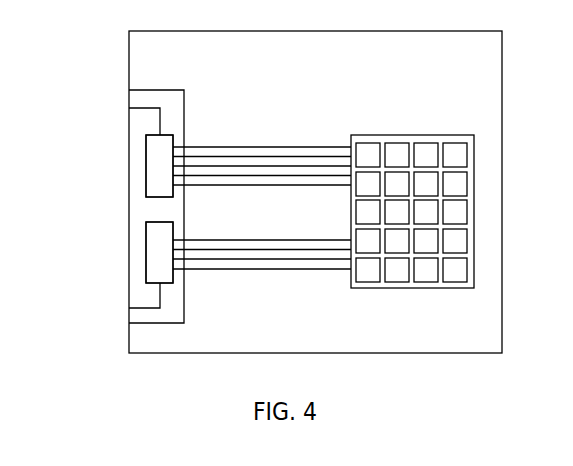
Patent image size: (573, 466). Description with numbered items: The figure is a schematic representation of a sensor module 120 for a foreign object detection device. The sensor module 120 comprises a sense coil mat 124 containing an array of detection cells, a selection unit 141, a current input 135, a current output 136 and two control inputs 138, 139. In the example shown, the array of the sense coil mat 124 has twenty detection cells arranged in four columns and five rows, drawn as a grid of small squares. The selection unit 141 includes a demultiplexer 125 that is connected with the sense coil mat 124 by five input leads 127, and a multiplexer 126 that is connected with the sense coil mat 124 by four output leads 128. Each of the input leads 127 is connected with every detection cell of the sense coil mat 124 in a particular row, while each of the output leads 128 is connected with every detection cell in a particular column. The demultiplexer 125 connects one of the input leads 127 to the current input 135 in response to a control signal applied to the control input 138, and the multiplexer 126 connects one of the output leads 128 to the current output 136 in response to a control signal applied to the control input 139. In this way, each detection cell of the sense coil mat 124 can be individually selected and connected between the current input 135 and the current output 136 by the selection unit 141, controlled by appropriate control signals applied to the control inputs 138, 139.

The sensor module 120 is at (128, 45).
The selection unit 141 is at (157, 90).
The control input 138 is at (129, 108).
The control input 139 is at (129, 307).
The current input 135 is at (146, 163).
The current output 136 is at (129, 253).
The demultiplexer 125 is at (174, 136).
The multiplexer 126 is at (173, 284).
The input leads 127 is at (293, 185).
The output leads 128 is at (280, 240).
The sense coil mat 124 is at (438, 135).